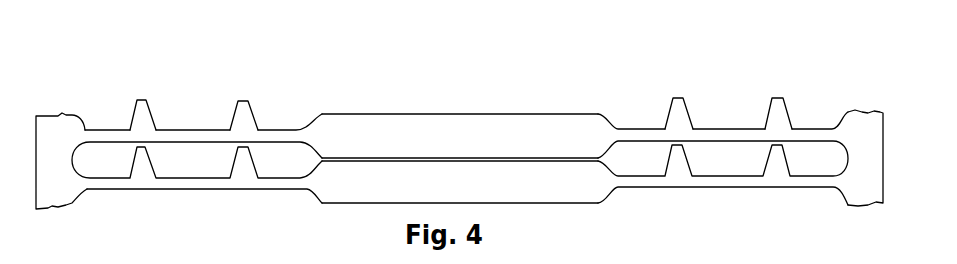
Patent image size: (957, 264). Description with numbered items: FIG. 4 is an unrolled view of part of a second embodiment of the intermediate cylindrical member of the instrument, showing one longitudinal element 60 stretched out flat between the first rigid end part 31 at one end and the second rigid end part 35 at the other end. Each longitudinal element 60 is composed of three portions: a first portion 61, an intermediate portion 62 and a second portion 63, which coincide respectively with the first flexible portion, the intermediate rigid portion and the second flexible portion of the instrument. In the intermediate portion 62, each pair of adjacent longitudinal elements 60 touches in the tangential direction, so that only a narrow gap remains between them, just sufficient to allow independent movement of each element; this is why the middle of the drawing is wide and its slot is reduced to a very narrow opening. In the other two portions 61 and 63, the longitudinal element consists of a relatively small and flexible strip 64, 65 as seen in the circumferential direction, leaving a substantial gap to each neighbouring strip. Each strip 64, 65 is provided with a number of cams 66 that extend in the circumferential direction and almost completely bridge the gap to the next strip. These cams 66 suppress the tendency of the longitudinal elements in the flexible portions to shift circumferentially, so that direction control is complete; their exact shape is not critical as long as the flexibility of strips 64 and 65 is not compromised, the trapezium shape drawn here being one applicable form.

The first rigid end part 31 is at (53, 125).
The second rigid end part 35 is at (867, 127).
The longitudinal element 60 is at (459, 123).
The first portion 61 is at (195, 122).
The intermediate portion 62 is at (492, 130).
The second portion 63 is at (731, 118).
The flexible strip 64 is at (187, 145).
The flexible strip 65 is at (718, 142).
The cams 66 is at (145, 108).